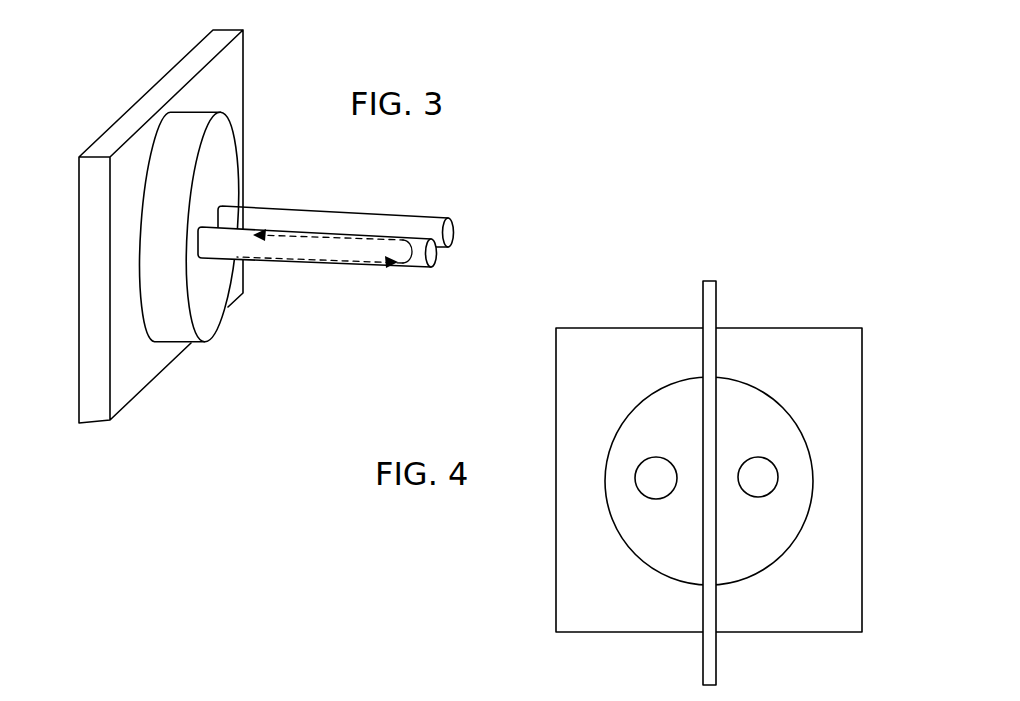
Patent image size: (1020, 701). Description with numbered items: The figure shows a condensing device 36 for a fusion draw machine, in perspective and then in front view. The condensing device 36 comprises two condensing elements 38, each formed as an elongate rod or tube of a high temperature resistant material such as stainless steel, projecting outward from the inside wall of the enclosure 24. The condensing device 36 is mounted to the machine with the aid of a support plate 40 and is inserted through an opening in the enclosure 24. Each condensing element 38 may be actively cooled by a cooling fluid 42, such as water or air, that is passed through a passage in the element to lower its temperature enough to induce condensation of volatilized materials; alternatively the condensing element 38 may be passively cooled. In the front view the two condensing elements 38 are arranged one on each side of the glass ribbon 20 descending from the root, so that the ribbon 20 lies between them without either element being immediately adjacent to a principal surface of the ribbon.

In FIG. 4, the glass ribbon 20 is at (716, 295).
In FIG. 3, the enclosure 24 is at (180, 58).
In FIG. 4, the enclosure 24 is at (802, 327).
In FIG. 3, the condensing device 36 is at (253, 366).
In FIG. 3, the condensing element 38 is at (428, 212).
In FIG. 4, the condensing element 38 is at (758, 457).
In FIG. 3, the support plate 40 is at (225, 154).
In FIG. 4, the support plate 40 is at (757, 570).
In FIG. 3, the cooling fluid 42 is at (329, 247).